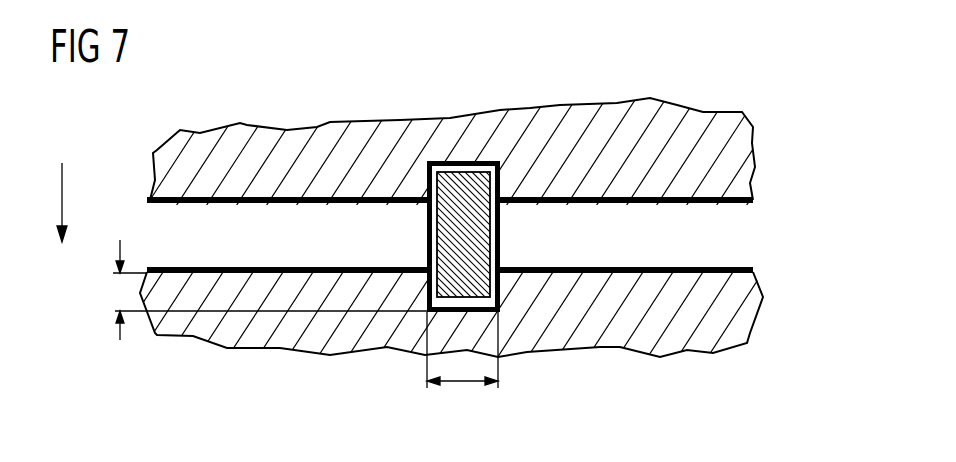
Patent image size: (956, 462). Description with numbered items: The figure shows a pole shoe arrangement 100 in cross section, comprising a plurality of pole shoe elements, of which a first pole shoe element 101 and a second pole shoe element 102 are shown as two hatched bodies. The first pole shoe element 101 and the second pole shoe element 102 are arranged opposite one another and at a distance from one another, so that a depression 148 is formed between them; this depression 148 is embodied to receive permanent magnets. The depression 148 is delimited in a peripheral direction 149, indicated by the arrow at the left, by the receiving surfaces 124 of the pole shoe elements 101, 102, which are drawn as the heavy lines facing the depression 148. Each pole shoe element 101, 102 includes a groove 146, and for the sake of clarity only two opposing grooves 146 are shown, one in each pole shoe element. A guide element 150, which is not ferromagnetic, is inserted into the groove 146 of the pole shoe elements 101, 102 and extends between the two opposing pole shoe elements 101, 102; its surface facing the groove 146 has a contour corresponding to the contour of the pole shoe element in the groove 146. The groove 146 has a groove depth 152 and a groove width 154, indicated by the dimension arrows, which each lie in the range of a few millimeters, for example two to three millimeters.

The pole shoe arrangement 100 is at (749, 73).
The first pole shoe element 101 is at (742, 310).
The second pole shoe element 102 is at (742, 142).
The receiving surfaces 124 is at (222, 203).
The groove 146 is at (460, 168).
The depression 148 is at (725, 247).
The peripheral direction 149 is at (62, 193).
The guide element 150 is at (480, 237).
The groove depth 152 is at (118, 291).
The groove width 154 is at (462, 383).